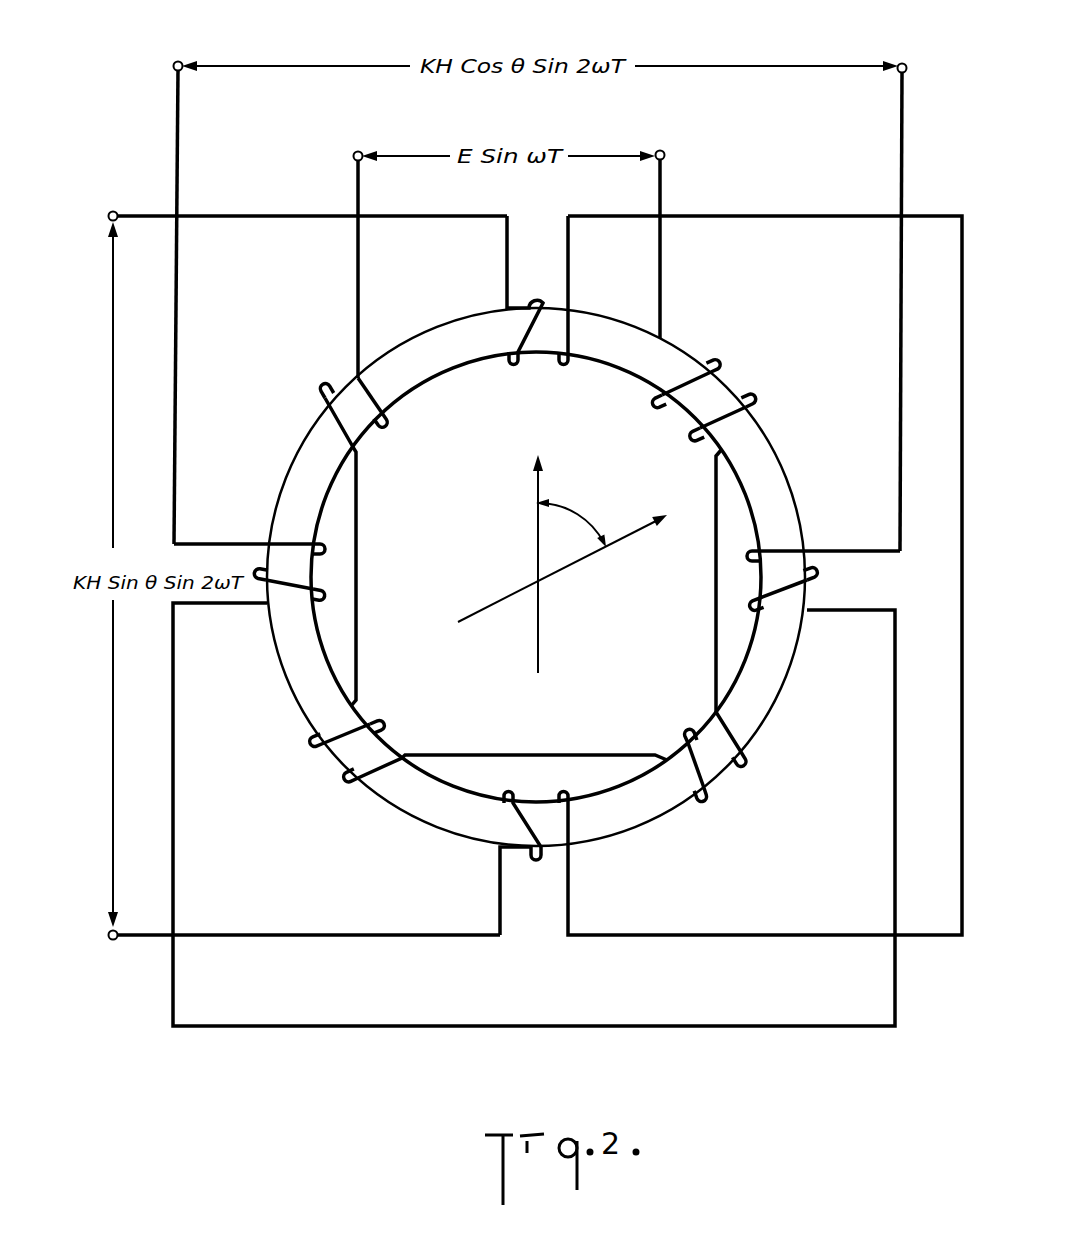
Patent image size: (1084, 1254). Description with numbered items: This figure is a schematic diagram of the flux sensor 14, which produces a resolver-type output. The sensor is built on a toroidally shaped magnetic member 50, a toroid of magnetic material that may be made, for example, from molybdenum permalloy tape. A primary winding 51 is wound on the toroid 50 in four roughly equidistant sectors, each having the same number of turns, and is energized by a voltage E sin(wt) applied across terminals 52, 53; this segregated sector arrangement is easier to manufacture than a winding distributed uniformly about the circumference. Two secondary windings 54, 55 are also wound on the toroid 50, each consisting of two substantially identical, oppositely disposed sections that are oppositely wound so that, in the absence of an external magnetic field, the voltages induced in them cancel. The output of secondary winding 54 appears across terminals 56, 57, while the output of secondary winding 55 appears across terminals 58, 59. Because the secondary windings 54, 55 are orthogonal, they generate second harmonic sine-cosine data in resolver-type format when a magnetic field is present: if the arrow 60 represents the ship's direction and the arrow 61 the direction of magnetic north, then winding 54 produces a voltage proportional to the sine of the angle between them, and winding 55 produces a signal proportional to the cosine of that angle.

The flux sensor 14 is at (546, 562).
The toroidally shaped magnetic member 50 is at (762, 710).
The primary winding 51 is at (384, 430).
The terminal 52 is at (353, 152).
The terminal 53 is at (665, 155).
The secondary winding 54 is at (563, 368).
The secondary winding 55 is at (330, 606).
The terminal 56 is at (114, 210).
The terminal 57 is at (112, 942).
The terminal 58 is at (180, 58).
The terminal 59 is at (909, 61).
The arrow 60 is at (538, 492).
The arrow 61 is at (640, 533).